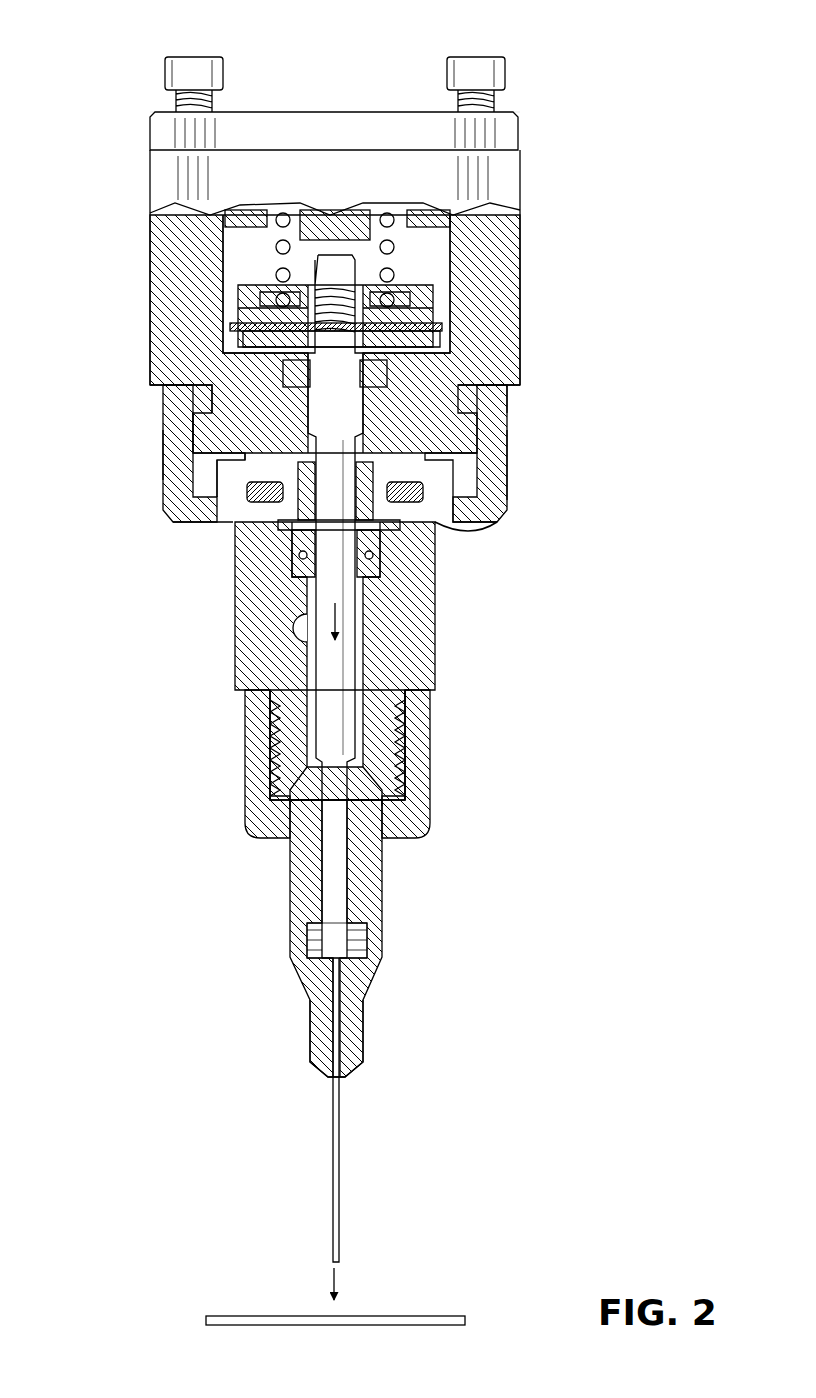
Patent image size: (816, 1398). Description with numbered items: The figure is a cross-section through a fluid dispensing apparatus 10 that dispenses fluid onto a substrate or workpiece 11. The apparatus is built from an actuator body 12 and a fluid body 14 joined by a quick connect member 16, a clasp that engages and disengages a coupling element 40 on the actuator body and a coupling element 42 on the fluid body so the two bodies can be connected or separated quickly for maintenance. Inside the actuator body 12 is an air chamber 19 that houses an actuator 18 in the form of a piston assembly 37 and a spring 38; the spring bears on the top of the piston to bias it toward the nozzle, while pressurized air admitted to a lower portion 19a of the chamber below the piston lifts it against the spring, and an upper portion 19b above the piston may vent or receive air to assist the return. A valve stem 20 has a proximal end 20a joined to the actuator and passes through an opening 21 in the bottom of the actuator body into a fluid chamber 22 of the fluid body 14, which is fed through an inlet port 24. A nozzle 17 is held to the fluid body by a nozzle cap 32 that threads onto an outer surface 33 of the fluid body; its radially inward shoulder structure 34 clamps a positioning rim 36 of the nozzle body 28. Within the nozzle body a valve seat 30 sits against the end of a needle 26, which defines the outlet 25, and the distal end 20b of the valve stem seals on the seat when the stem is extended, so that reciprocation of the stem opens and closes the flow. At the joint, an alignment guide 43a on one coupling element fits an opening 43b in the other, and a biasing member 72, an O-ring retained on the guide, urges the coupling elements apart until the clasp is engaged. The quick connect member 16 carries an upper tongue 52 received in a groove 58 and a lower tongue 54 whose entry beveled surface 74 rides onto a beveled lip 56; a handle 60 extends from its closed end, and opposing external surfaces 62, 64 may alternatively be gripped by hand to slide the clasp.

The fluid dispensing apparatus 10 is at (82, 52).
The substrate or workpiece 11 is at (244, 1315).
The actuator body 12 is at (146, 183).
The fluid body 14 is at (232, 678).
The quick connect member 16 is at (510, 421).
The nozzle 17 is at (308, 1024).
The actuator 18 is at (436, 282).
The air chamber 19 is at (432, 242).
The lower portion of the air chamber 19a is at (236, 356).
The upper portion of the air chamber 19b is at (235, 238).
The valve stem 20 is at (358, 628).
The proximal end 20a is at (425, 360).
The distal end 20b is at (350, 955).
The opening 21 is at (300, 548).
The fluid chamber 22 is at (395, 680).
The inlet port 24 is at (302, 628).
The outlet 25 is at (338, 1264).
The needle 26 is at (341, 1148).
The nozzle body 28 is at (383, 914).
The valve seat 30 is at (310, 944).
The nozzle cap 32 is at (428, 762).
The outer surface 33 is at (405, 810).
The radially inward shoulder structure 34 is at (265, 832).
The positioning rim 36 is at (282, 806).
The piston assembly 37 is at (240, 300).
The spring 38 is at (272, 252).
The coupling element 40 is at (192, 430).
The coupling element 42 is at (240, 492).
The alignment guide 43a is at (440, 460).
The opening 43b is at (297, 462).
The upper tongue 52 is at (470, 398).
The lower tongue 54 is at (470, 515).
The lip 56 is at (215, 512).
The groove 58 is at (200, 396).
The handle 60 is at (463, 541).
The external surface 62 is at (508, 472).
The external surface 64 is at (164, 452).
The biasing member 72 is at (262, 504).
The entry beveled surface 74 is at (422, 492).